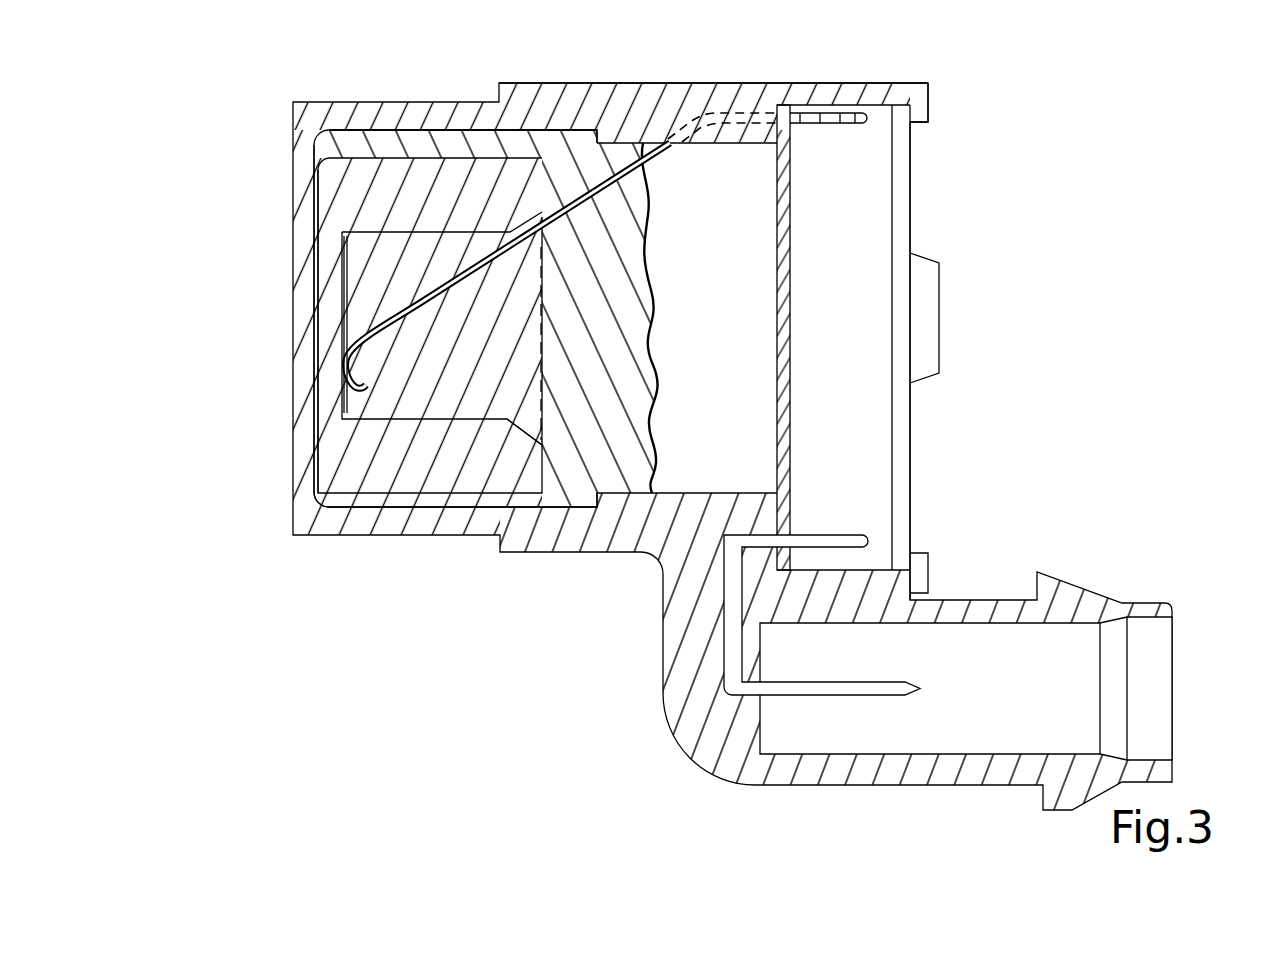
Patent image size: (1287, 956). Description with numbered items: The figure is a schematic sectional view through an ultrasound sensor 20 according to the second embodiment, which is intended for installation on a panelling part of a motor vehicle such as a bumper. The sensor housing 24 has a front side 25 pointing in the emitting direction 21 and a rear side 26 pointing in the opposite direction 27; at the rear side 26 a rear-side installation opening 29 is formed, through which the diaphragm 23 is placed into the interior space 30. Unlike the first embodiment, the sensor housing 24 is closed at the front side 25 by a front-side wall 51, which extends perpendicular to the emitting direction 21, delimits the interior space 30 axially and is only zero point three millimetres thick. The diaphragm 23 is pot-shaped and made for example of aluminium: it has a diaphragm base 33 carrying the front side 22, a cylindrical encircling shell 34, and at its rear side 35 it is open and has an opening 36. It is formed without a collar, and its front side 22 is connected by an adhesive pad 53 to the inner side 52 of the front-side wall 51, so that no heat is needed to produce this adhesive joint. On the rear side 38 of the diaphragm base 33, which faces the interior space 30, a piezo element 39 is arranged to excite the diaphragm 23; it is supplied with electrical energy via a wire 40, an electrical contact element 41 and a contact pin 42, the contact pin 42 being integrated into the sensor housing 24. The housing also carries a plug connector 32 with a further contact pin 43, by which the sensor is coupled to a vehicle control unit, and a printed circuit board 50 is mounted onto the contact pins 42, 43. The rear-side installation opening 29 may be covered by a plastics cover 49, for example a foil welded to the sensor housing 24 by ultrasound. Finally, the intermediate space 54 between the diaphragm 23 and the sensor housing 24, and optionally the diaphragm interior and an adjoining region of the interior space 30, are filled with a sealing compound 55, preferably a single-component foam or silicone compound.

The ultrasound sensor 20 is at (1060, 118).
The emitting direction 21 is at (148, 343).
The front side 22 is at (315, 212).
The diaphragm 23 is at (430, 485).
The sensor housing 24 is at (592, 105).
The front side 25 is at (262, 565).
The rear side 26 is at (940, 125).
The opposite direction 27 is at (1148, 258).
The rear-side installation opening 29 is at (863, 257).
The interior space 30 is at (699, 375).
The plug connector 32 is at (1180, 590).
The diaphragm base 33 is at (328, 385).
The shell 34 is at (455, 175).
The rear side 35 is at (537, 302).
The opening 36 is at (540, 440).
The rear side 38 is at (348, 407).
The piezo element 39 is at (343, 283).
The wire 40 is at (396, 318).
The electrical contact element 41 is at (643, 148).
The contact pin 42 is at (840, 125).
The further contact pin 43 is at (842, 535).
The plastics cover 49 is at (905, 445).
The printed circuit board 50 is at (783, 312).
The front-side wall 51 is at (303, 168).
The inner side 52 is at (320, 492).
The adhesive pad 53 is at (315, 300).
The intermediate space 54 is at (347, 135).
The sealing compound 55 is at (418, 137).